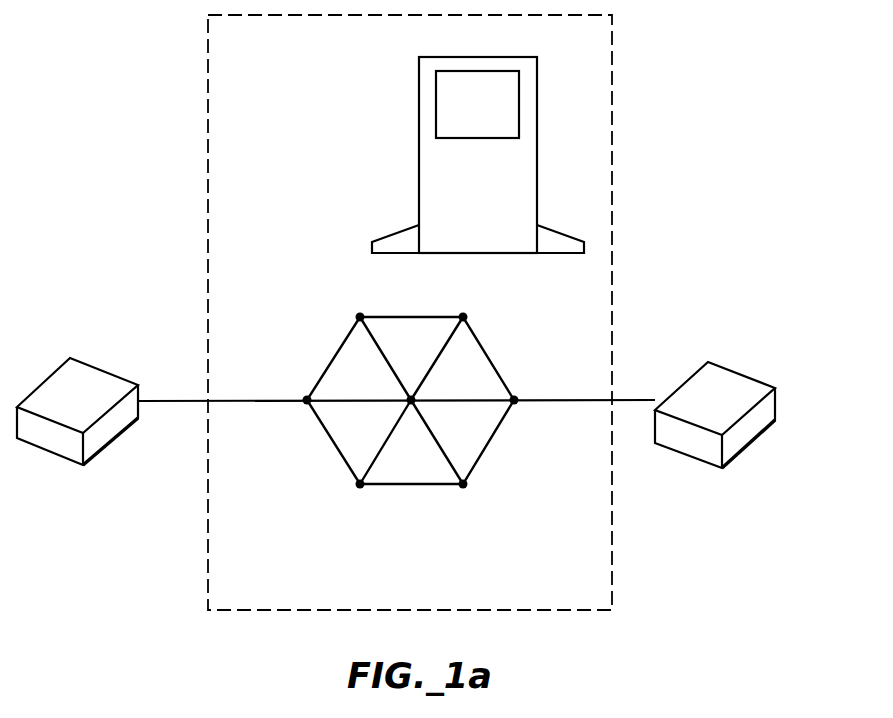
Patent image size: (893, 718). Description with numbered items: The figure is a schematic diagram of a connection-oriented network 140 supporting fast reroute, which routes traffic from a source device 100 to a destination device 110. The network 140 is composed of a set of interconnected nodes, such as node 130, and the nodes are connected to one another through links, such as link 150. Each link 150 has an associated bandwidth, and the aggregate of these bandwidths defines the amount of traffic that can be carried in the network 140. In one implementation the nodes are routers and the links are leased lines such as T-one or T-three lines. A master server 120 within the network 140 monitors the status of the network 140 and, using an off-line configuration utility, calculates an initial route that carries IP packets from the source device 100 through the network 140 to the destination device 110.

The source device 100 is at (88, 410).
The destination device 110 is at (728, 410).
The master server 120 is at (493, 226).
The node 130 is at (467, 487).
The network 140 is at (208, 68).
The link 150 is at (329, 440).